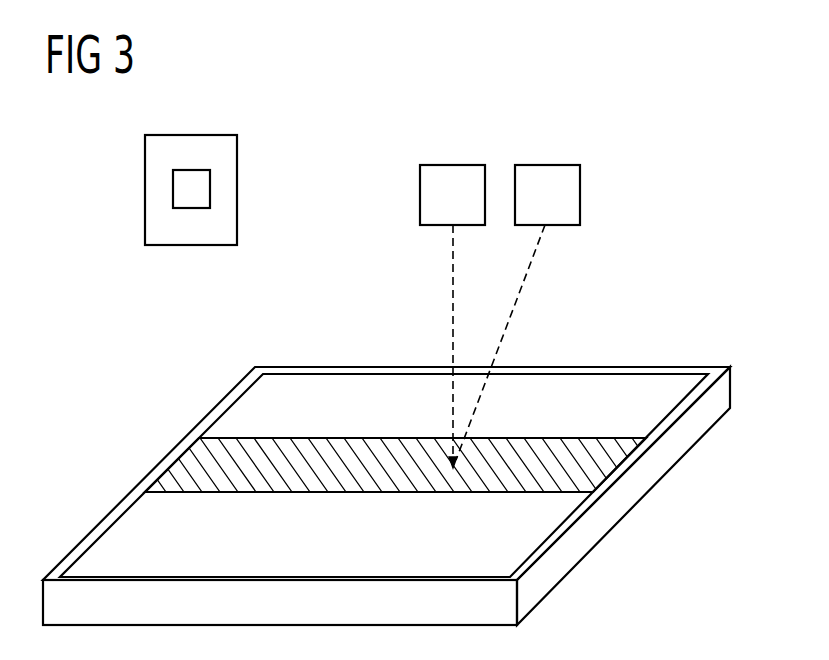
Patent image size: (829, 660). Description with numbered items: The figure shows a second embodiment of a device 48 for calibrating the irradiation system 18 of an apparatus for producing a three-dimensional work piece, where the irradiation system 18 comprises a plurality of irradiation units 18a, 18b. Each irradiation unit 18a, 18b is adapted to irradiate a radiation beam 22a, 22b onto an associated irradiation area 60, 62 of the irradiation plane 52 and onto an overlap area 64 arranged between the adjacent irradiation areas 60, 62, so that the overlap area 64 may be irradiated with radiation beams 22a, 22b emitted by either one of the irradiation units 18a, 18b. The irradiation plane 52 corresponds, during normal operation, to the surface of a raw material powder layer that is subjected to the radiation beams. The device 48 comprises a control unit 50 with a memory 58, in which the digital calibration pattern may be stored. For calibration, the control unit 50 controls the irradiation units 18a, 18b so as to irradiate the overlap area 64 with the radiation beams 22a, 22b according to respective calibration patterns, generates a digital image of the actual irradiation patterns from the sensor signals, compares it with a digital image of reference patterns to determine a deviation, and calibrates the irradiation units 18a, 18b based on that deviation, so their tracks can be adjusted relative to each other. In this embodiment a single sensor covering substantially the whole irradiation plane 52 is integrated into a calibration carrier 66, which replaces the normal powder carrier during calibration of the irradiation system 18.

The irradiation system 18 is at (507, 143).
The irradiation unit 18a is at (433, 195).
The irradiation unit 18b is at (567, 196).
The radiation beam 22a is at (452, 290).
The radiation beam 22b is at (523, 290).
The device 48 is at (705, 237).
The control unit 50 is at (227, 156).
The irradiation plane 52 is at (702, 372).
The memory 58 is at (187, 193).
The irradiation area 60 is at (662, 406).
The irradiation area 62 is at (517, 550).
The overlap area 64 is at (190, 460).
The calibration carrier 66 is at (637, 488).